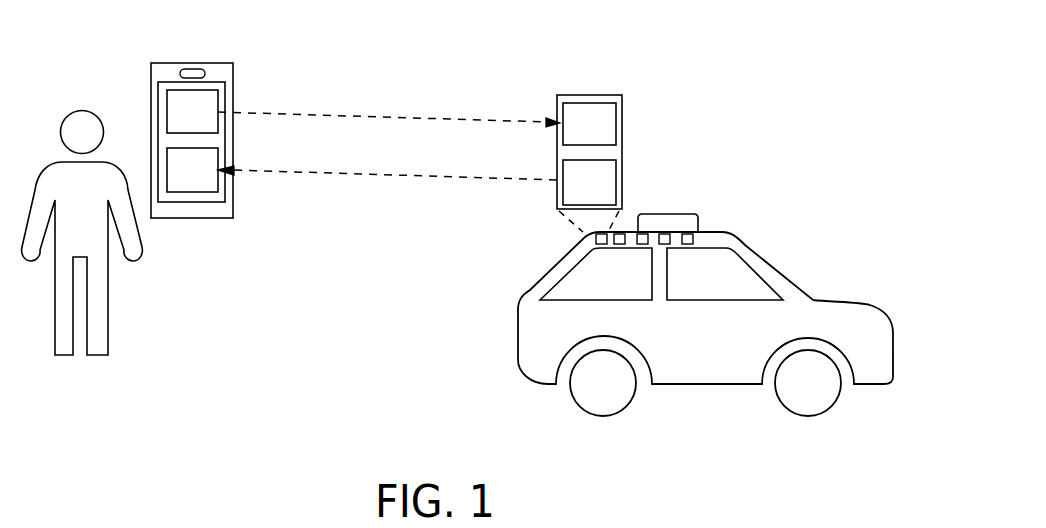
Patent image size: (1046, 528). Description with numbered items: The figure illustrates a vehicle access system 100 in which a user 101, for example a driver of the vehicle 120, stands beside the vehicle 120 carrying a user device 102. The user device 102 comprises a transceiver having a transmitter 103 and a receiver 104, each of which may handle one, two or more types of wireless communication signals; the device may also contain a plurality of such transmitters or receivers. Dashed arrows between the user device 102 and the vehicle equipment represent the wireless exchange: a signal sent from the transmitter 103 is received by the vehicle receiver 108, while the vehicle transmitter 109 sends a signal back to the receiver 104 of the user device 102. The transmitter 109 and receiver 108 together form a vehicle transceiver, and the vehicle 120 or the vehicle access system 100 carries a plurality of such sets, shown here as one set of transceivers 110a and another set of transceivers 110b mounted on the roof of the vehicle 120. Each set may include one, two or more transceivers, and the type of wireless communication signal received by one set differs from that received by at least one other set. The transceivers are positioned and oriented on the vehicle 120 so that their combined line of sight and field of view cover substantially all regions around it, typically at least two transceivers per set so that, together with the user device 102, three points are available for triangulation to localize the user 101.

The vehicle access system 100 is at (408, 305).
The user 101 is at (80, 110).
The user device 102 is at (163, 63).
The transmitter 103 is at (212, 122).
The receiver 104 is at (212, 181).
The receiver 108 is at (609, 137).
The transmitter 109 is at (609, 195).
The set of transceivers 110a is at (622, 233).
The set of transceivers 110b is at (668, 213).
The vehicle 120 is at (519, 364).